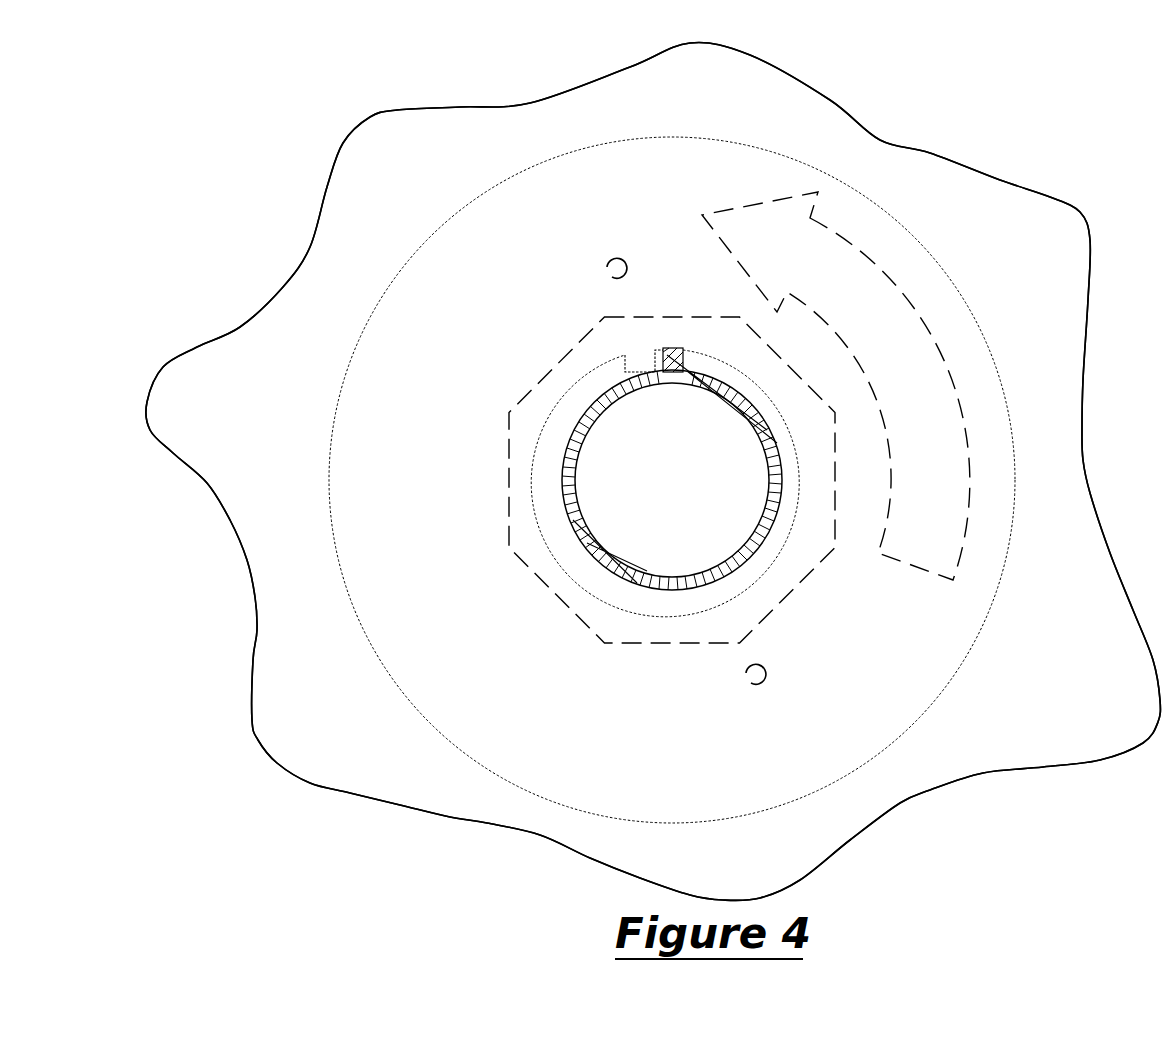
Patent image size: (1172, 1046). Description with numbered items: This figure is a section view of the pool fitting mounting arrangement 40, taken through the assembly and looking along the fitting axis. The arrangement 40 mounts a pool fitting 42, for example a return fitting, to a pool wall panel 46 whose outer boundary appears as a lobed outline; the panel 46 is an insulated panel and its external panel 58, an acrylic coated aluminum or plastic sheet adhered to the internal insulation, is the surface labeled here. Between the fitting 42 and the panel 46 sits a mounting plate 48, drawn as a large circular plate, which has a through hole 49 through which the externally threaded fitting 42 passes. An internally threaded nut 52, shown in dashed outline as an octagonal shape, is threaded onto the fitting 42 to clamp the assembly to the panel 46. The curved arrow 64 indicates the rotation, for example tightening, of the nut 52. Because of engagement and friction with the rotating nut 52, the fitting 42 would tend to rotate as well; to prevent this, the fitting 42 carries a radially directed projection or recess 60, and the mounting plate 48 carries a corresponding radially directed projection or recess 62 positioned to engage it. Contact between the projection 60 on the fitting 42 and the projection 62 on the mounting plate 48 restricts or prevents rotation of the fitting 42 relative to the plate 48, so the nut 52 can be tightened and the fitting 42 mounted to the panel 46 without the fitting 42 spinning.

The pool fitting mounting arrangement 40 is at (1052, 160).
The pool fitting 42 is at (770, 555).
The pool wall panel 46 is at (318, 140).
The mounting plate 48 is at (485, 352).
The through hole 49 is at (542, 517).
The nut 52 is at (565, 605).
The external panel 58 is at (286, 386).
The projection or recess 60 is at (685, 364).
The projection or recess 62 is at (643, 360).
The curved arrow 64 is at (890, 330).